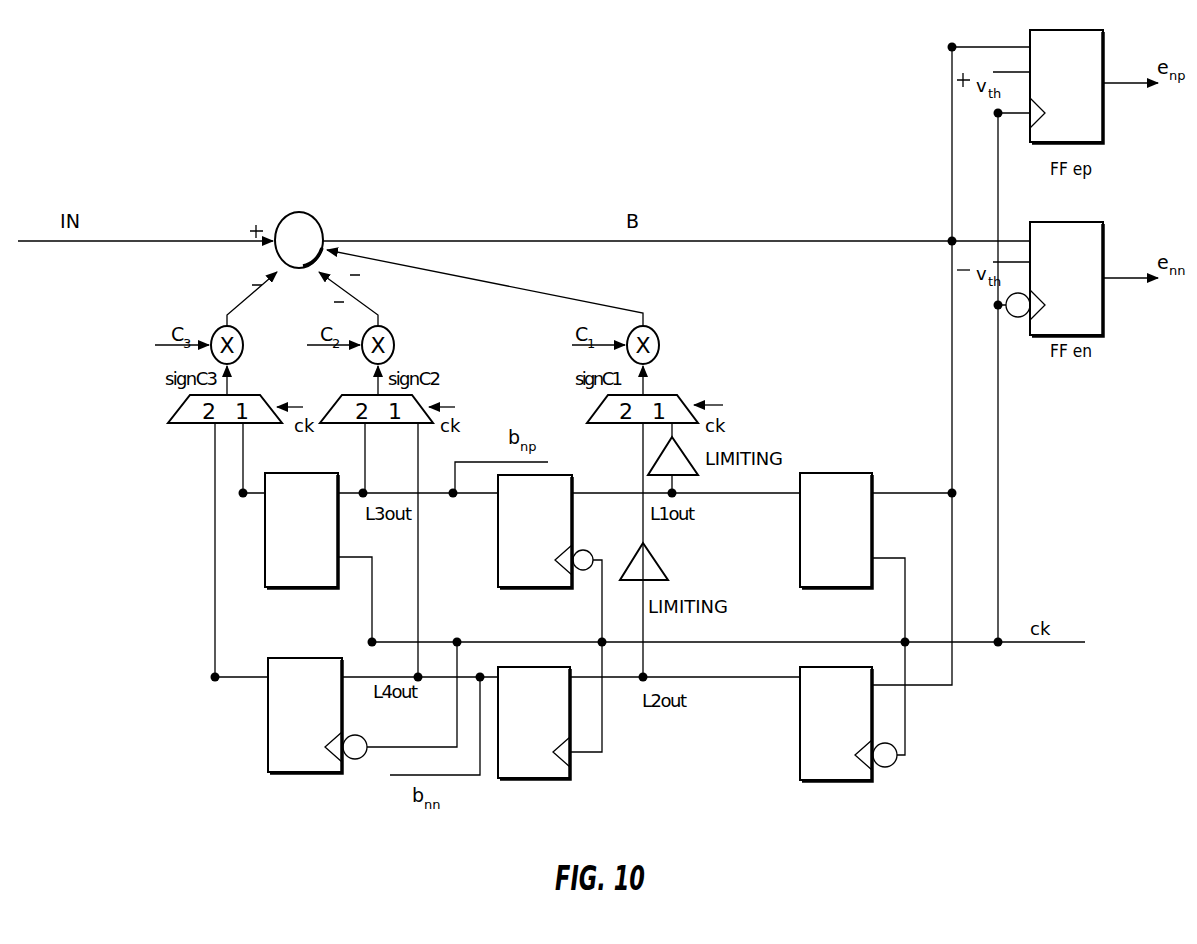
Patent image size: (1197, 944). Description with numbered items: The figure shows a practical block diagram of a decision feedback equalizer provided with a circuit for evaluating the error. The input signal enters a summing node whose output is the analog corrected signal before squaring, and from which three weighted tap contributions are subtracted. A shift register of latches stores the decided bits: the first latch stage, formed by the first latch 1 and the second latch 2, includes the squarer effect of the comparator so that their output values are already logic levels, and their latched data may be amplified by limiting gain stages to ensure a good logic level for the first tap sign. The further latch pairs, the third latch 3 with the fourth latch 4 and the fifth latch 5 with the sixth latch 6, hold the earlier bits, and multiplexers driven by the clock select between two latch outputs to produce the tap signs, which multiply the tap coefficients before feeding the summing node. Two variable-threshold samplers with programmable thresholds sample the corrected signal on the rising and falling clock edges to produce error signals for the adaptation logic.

The LATCH1 master latch 1 is at (836, 545).
The LATCH2 master latch 2 is at (836, 739).
The LATCH3 latch 3 is at (535, 546).
The LATCH4 latch 4 is at (534, 737).
The LATCH5 latch 5 is at (301, 545).
The LATCH6 latch 6 is at (305, 733).